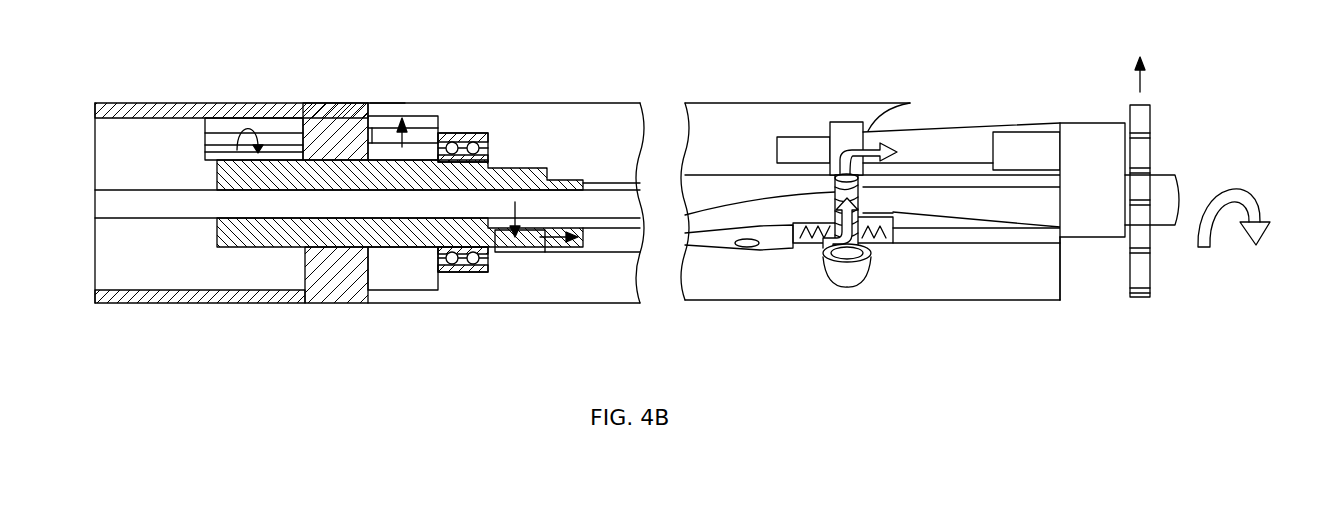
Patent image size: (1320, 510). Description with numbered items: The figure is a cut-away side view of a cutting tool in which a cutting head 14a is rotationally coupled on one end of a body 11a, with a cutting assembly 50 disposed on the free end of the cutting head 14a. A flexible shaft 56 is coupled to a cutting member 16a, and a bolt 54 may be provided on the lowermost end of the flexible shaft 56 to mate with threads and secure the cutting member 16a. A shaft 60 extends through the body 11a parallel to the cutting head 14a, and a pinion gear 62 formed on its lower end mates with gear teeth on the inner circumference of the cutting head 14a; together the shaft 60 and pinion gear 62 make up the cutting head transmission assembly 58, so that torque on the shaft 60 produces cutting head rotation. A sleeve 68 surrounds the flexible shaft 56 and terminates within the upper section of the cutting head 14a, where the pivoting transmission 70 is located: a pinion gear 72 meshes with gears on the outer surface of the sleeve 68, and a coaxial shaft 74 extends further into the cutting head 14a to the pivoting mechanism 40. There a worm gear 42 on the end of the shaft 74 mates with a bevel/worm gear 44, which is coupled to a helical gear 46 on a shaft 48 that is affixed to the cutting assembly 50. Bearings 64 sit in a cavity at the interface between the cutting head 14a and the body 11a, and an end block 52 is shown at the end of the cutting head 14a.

The body 11a is at (137, 107).
The cutting head 14a is at (607, 125).
The cutting member 16a is at (1140, 297).
The pivoting mechanism 40 is at (808, 118).
The worm gear 42 is at (887, 243).
The bevel/worm gear 44 is at (843, 286).
The helical gear 46 is at (850, 122).
The shaft 48 is at (942, 130).
The cutting assembly 50 is at (1097, 258).
The end block 52 is at (1085, 122).
The bolt 54 is at (1160, 175).
The flexible shaft 56 is at (125, 210).
The cutting head transmission assembly 58 is at (388, 92).
The shaft 60 is at (279, 133).
The pinion gear 62 is at (432, 122).
The bearings 64 is at (476, 133).
The sleeve 68 is at (260, 233).
The pivoting transmission 70 is at (508, 268).
The pinion gear 72 is at (530, 258).
The shaft 74 is at (600, 238).